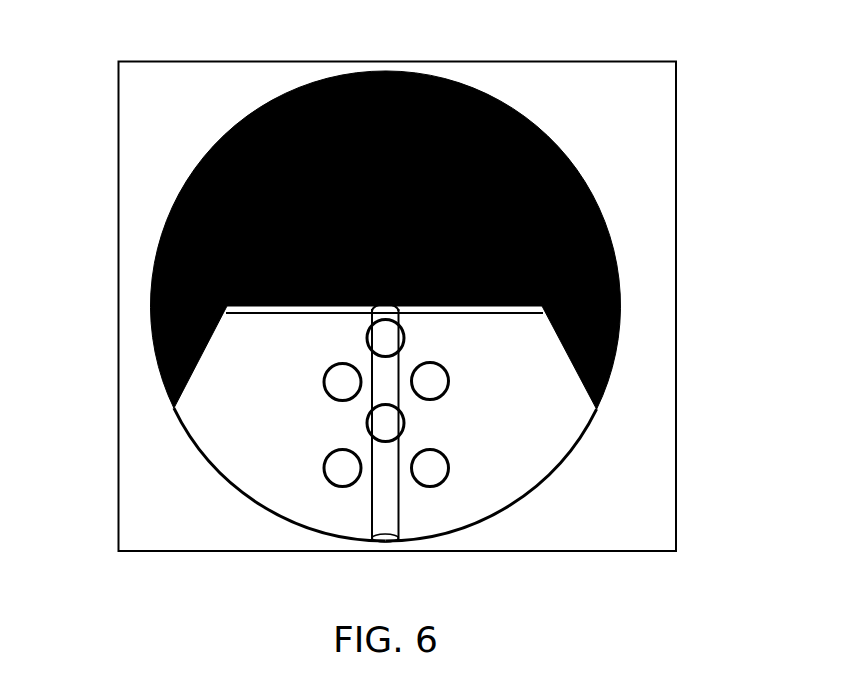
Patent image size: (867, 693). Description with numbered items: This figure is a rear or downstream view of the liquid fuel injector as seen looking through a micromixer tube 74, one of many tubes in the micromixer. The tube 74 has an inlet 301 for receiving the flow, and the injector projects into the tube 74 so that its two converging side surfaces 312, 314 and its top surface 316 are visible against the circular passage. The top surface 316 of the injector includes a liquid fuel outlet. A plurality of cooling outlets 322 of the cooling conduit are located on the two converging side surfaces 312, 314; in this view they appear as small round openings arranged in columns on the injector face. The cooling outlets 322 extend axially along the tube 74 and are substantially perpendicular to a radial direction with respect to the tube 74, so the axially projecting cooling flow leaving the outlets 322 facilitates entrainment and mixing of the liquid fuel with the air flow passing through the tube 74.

The micromixer tube 74 is at (168, 54).
The inlet 301 is at (531, 204).
The converging side surface 312 is at (255, 448).
The converging side surface 314 is at (515, 448).
The top surface 316 is at (503, 308).
The cooling outlets 322 is at (324, 376).